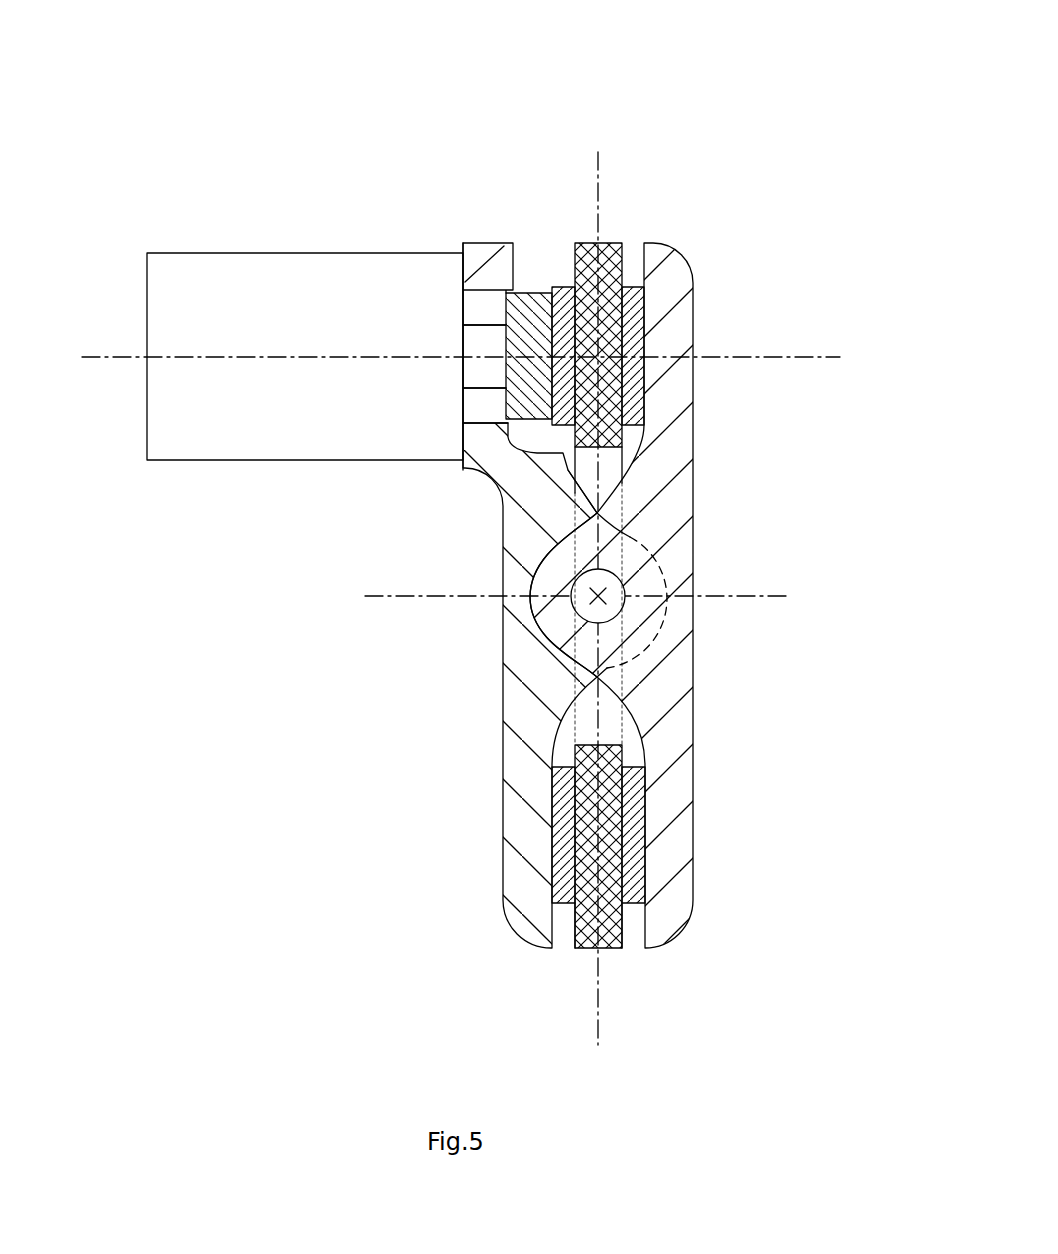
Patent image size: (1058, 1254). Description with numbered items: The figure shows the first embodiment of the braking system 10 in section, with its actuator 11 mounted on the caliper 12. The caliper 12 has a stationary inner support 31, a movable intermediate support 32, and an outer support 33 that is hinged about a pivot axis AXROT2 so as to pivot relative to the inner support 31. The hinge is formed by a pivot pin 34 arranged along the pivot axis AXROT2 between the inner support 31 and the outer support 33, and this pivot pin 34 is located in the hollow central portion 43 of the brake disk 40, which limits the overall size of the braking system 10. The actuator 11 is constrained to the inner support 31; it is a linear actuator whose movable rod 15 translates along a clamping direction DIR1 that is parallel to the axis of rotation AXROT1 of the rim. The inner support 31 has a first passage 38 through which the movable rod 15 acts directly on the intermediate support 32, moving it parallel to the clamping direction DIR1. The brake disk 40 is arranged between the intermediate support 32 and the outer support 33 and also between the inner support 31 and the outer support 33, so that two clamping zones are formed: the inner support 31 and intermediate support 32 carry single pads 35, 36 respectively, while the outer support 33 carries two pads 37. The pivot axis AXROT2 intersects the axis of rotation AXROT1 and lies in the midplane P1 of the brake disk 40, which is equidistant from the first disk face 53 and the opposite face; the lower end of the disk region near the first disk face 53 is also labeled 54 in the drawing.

The braking system 10 is at (225, 745).
The actuator 11 is at (235, 273).
The caliper 12 is at (707, 150).
The movable rod 15 is at (475, 340).
The stationary inner support 31 is at (520, 520).
The movable intermediate support 32 is at (533, 298).
The outer support 33 is at (678, 330).
The pivot pin 34 is at (645, 535).
The pad 35 is at (563, 847).
The pad 36 is at (565, 287).
The pad 37 is at (634, 290).
The first passage 38 is at (485, 305).
The brake disk 40 is at (608, 243).
The hollow central portion 43 is at (608, 468).
The first disk face 53 is at (568, 930).
The lower shaft end 54 is at (628, 930).
The clamping direction DIR1 is at (92, 357).
The midplane P1 is at (598, 177).
The axis of rotation AXROT1 is at (755, 596).
The pivot axis AXROT2 is at (610, 603).